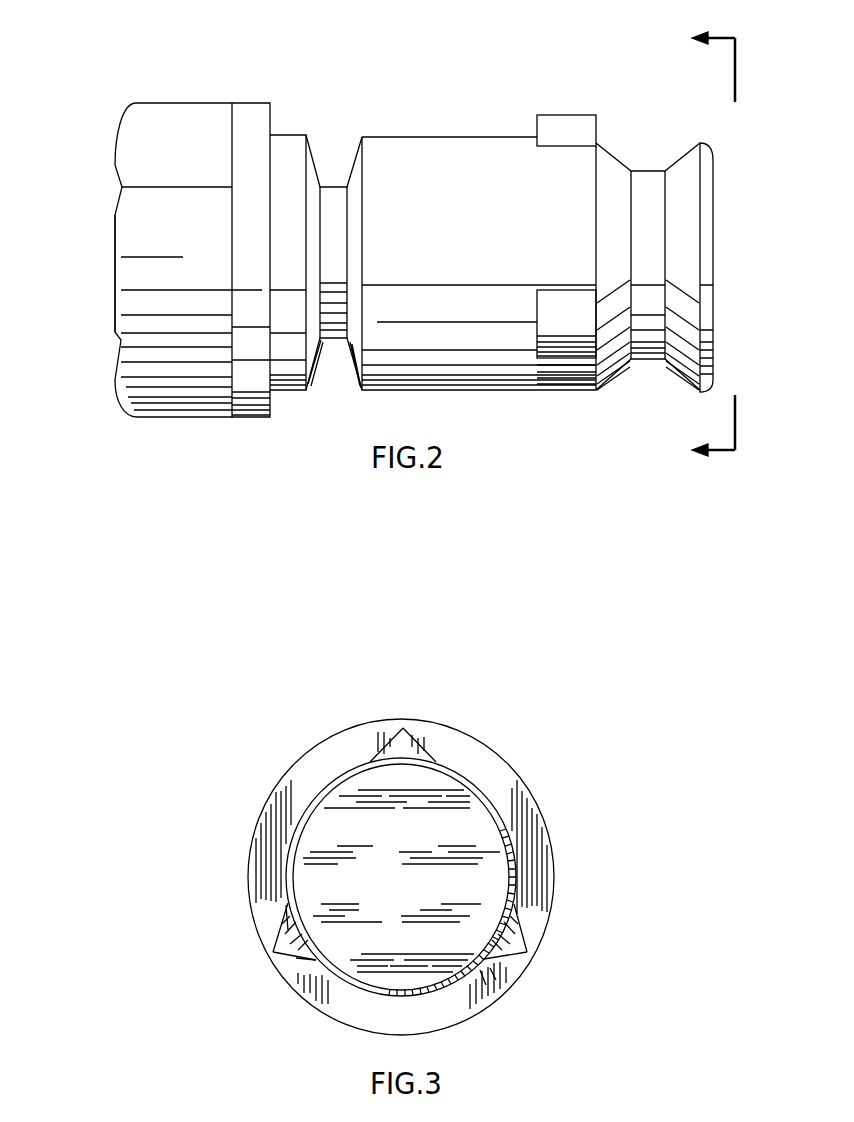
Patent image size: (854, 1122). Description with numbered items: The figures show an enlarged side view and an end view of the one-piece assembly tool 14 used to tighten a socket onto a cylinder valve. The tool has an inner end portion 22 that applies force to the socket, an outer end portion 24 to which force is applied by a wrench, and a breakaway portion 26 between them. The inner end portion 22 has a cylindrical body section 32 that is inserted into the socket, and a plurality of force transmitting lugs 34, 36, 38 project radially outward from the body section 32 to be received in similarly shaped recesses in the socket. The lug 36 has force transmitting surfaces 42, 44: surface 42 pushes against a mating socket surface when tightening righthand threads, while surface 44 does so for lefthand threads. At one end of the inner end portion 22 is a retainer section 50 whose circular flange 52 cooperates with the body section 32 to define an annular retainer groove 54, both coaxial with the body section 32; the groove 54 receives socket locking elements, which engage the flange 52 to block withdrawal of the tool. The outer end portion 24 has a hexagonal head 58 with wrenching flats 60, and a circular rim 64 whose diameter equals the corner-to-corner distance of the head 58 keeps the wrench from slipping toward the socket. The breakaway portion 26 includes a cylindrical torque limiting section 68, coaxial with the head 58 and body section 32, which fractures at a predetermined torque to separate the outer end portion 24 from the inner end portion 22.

In FIG. 2, the assembly tool 14 is at (405, 90).
In FIG. 3, the assembly tool 14 is at (272, 762).
In FIG. 2, the inner end portion 22 is at (497, 143).
In FIG. 3, the inner end portion 22 is at (510, 830).
In FIG. 2, the outer end portion 24 is at (204, 103).
In FIG. 2, the breakaway portion 26 is at (330, 162).
In FIG. 2, the cylindrical body section 32 is at (414, 378).
In FIG. 2, the force transmitting lug 34 is at (588, 115).
In FIG. 3, the force transmitting lug 34 is at (404, 729).
In FIG. 2, the force transmitting lug 36 is at (560, 362).
In FIG. 3, the force transmitting lug 36 is at (273, 952).
In FIG. 3, the force transmitting lug 38 is at (527, 952).
In FIG. 2, the force transmitting surface 42 is at (537, 340).
In FIG. 3, the force transmitting surface 42 is at (298, 965).
In FIG. 2, the force transmitting surface 44 is at (560, 335).
In FIG. 3, the force transmitting surface 44 is at (276, 930).
In FIG. 2, the retainer section 50 is at (665, 158).
In FIG. 2, the circular flange 52 is at (715, 352).
In FIG. 3, the circular flange 52 is at (436, 788).
In FIG. 2, the annular retainer groove 54 is at (649, 345).
In FIG. 2, the hexagonal head 58 is at (113, 297).
In FIG. 2, the wrenching flats 60 is at (134, 235).
In FIG. 2, the circular rim 64 is at (247, 405).
In FIG. 3, the circular rim 64 is at (336, 738).
In FIG. 2, the torque limiting section 68 is at (334, 343).